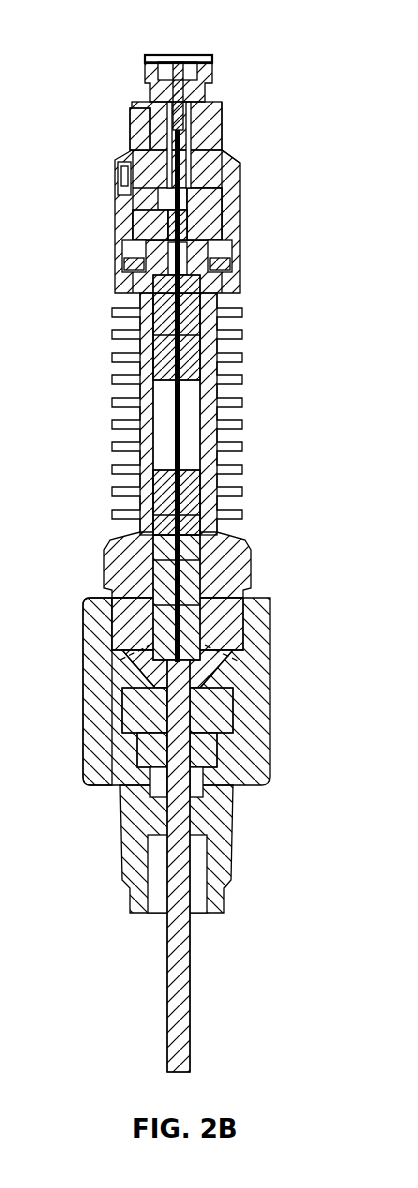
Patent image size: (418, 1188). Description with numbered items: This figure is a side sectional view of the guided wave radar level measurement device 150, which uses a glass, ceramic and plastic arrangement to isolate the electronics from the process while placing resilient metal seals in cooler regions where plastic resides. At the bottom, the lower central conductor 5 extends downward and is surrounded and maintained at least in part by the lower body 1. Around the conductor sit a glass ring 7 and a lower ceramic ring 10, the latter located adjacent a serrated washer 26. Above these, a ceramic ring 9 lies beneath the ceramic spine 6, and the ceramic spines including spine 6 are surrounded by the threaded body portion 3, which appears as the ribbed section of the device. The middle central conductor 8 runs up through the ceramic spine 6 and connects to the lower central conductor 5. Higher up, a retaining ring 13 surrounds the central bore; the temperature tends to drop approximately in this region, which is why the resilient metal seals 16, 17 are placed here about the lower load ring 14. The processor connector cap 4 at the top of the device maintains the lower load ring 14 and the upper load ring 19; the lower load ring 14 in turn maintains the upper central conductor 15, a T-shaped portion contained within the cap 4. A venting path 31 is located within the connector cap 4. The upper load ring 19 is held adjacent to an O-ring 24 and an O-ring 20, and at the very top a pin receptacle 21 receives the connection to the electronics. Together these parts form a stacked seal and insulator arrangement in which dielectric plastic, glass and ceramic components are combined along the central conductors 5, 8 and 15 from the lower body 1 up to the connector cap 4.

The guided wave radar level measurement device 150 is at (93, 40).
The lower body 1 is at (270, 742).
The threaded body portion 3 is at (98, 297).
The processor connector cap 4 is at (242, 180).
The lower central conductor 5 is at (220, 1022).
The ceramic spine 6 is at (197, 610).
The glass ring 7 is at (258, 790).
The middle central conductor 8 is at (170, 608).
The ceramic ring 9 is at (90, 640).
The lower ceramic ring 10 is at (228, 716).
The retaining ring 13 is at (200, 289).
The lower load ring 14 is at (222, 240).
The upper central conductor 15 is at (192, 193).
The resilient metal seal 16 is at (163, 240).
The resilient metal seal 17 is at (125, 262).
The upper load ring 19 is at (222, 152).
The O-ring 20 is at (207, 128).
The pin receptacle 21 is at (190, 74).
The O-ring 24 is at (148, 152).
The serrated washer 26 is at (225, 650).
The venting path 31 is at (123, 197).